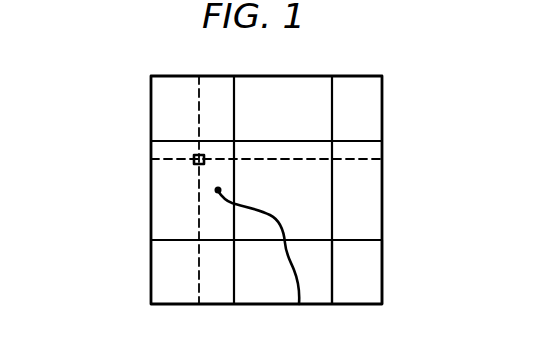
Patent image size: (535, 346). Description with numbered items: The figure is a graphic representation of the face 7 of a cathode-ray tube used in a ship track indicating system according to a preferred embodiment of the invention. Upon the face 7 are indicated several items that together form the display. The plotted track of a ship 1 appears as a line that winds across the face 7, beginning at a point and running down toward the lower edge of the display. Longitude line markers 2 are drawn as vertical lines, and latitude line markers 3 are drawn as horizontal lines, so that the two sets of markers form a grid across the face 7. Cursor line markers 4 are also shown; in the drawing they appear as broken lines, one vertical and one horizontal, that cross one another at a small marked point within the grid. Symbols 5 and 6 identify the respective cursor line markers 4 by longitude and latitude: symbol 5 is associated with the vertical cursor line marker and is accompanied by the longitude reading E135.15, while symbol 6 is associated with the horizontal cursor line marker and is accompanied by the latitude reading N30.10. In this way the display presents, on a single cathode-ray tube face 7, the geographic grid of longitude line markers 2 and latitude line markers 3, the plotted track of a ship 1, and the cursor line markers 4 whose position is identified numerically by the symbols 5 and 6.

The plotted track of a ship 1 is at (298, 294).
The longitude line markers 2 is at (237, 84).
The latitude line markers 3 is at (400, 226).
The cursor line markers 4 is at (174, 156).
The longitude symbol 5 is at (186, 88).
The latitude symbol 6 is at (380, 153).
The face of a cathode-ray tube 7 is at (370, 276).
The longitude value E135.15 is at (193, 118).
The latitude value N30.10 is at (355, 156).